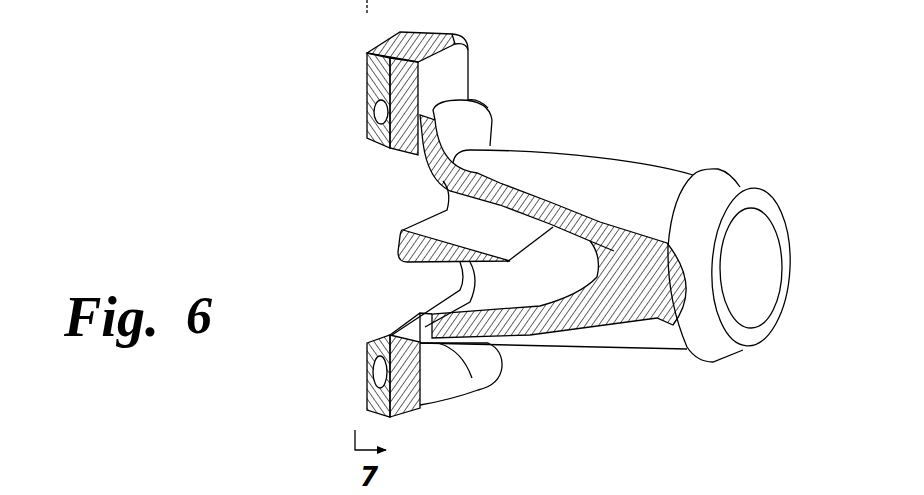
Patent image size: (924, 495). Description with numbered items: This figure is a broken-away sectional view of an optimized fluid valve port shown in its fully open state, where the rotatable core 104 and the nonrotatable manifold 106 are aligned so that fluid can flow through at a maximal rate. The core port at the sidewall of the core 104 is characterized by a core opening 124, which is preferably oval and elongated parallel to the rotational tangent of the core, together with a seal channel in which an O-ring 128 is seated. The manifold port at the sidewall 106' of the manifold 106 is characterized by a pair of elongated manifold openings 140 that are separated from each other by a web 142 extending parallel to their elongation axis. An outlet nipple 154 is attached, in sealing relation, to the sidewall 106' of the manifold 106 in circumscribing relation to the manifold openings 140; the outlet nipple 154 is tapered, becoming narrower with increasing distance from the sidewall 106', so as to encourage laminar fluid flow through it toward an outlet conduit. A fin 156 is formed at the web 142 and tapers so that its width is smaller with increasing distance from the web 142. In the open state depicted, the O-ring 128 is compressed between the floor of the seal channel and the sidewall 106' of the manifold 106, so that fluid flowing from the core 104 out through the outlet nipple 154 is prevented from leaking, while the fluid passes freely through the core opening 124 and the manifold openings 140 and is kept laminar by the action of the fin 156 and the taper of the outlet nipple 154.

The core 104 is at (356, 71).
The manifold 106 is at (501, 88).
The sidewall of the manifold 106' is at (483, 384).
The core opening 124 is at (366, 172).
The O-ring 128 is at (366, 382).
The manifold openings 140 is at (420, 189).
The web 142 is at (397, 250).
The outlet nipple 154 is at (604, 158).
The fin 156 is at (471, 230).